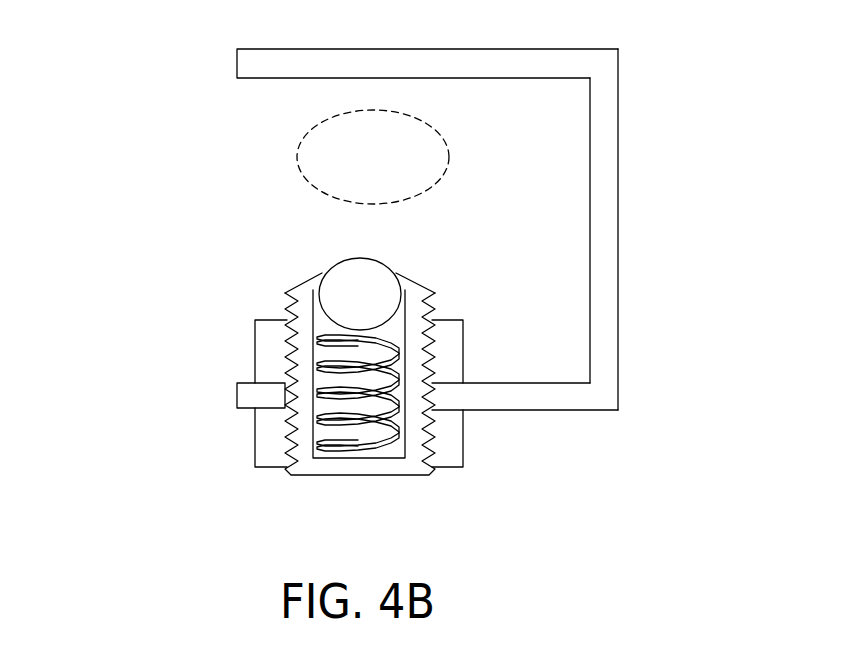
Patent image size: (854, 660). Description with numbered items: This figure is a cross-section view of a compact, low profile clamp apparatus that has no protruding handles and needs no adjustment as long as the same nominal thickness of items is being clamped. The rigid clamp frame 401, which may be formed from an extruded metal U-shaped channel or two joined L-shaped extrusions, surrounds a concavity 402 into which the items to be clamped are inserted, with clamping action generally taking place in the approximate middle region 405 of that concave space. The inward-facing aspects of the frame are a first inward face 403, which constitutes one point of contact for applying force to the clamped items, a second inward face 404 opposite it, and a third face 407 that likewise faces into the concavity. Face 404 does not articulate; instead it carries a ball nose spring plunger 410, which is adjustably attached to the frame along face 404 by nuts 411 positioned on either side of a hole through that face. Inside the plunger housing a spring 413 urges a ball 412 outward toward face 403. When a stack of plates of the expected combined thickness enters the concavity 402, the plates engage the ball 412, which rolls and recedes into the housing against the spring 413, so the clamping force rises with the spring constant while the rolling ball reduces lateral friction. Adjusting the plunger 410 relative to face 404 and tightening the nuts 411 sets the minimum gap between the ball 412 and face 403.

The clamp frame 401 is at (458, 209).
The concavity 402 is at (264, 163).
The first inward face 403 is at (449, 91).
The second inward face 404 is at (509, 373).
The middle region 405 is at (373, 157).
The third face 407 is at (578, 197).
The ball nose spring plunger 410 is at (363, 475).
The nuts 411 is at (255, 340).
The ball 412 is at (362, 257).
The spring 413 is at (400, 432).